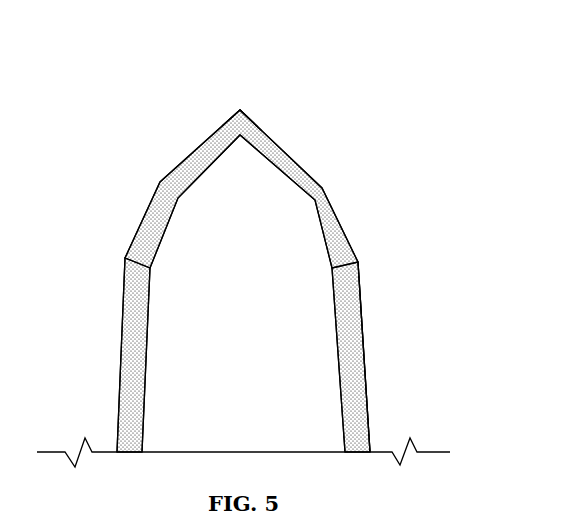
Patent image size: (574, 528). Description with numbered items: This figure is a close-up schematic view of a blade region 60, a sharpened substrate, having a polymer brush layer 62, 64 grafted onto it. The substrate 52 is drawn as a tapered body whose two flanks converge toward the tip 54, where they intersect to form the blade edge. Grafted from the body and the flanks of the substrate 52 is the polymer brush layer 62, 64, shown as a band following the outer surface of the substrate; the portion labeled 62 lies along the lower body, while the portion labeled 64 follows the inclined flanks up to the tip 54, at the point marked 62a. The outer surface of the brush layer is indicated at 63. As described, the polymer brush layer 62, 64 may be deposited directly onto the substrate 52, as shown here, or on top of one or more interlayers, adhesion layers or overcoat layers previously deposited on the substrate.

The blade region 60 is at (428, 68).
The substrate 52 is at (255, 322).
The tip 54 is at (240, 116).
The polymer brush layer 62 is at (122, 358).
The apex of wall 62a is at (240, 110).
The outer surface of side wall 63 is at (360, 315).
The polymer brush layer 64 is at (143, 227).